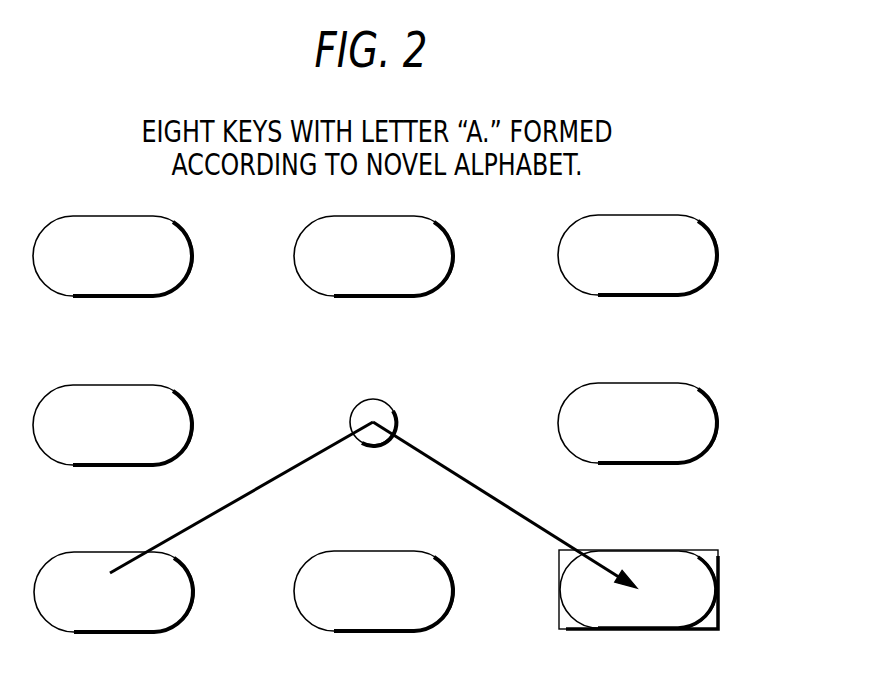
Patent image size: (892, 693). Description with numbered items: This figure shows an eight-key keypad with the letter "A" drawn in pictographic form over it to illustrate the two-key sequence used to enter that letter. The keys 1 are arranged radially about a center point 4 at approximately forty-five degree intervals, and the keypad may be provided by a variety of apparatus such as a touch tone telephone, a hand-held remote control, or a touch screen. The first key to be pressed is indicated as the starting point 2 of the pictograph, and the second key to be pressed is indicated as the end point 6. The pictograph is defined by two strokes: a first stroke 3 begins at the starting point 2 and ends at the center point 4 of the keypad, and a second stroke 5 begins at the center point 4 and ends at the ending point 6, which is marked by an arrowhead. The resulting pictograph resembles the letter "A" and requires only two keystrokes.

The keys 1 is at (717, 260).
The starting point 2 is at (127, 561).
The first stroke 3 is at (261, 489).
The center point 4 is at (358, 405).
The second stroke 5 is at (463, 478).
The end point 6 is at (637, 590).